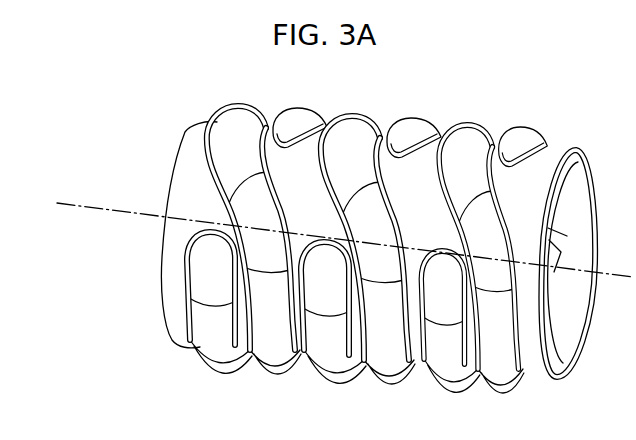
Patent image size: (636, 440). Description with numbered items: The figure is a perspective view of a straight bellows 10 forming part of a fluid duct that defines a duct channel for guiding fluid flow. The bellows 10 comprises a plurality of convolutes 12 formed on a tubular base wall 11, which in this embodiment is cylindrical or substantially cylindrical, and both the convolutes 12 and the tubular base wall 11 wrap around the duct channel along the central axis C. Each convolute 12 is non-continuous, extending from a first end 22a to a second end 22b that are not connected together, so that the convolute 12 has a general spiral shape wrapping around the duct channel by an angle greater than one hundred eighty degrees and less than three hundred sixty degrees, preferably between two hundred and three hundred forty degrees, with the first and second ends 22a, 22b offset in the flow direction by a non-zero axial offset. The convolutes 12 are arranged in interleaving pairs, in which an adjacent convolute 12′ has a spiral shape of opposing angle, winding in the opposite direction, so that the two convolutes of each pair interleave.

The bellows 10 is at (437, 80).
The tubular base wall 11 is at (189, 136).
The convolute 12 is at (224, 235).
The first convolute of interleaving pair 12′ is at (278, 386).
The first end 22a is at (201, 292).
The second end 22b is at (299, 112).
The central axis C is at (124, 210).